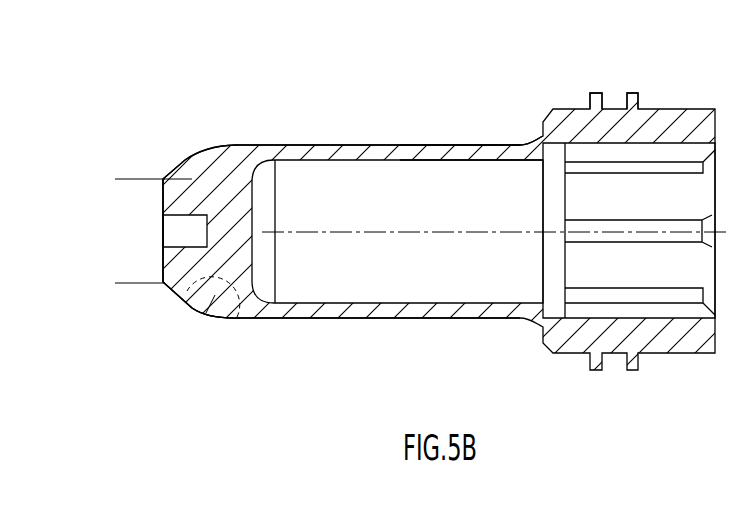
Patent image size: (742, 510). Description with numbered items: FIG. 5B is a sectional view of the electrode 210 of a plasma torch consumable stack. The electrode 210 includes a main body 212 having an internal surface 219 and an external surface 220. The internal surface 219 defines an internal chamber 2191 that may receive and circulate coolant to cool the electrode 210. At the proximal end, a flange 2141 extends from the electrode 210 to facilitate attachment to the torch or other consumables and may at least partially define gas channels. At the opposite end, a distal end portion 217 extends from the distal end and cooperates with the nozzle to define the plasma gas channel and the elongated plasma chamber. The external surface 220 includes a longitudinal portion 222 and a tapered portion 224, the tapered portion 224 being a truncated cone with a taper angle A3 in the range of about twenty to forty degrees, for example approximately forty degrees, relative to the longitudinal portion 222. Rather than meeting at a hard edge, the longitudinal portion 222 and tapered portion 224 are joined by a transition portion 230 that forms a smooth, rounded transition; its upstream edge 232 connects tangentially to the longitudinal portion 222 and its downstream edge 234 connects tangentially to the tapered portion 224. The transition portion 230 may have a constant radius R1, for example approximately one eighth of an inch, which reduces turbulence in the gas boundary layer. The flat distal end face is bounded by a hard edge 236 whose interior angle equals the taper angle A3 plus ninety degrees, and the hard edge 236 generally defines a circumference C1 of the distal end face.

The electrode 210 is at (398, 120).
The main body 212 is at (412, 325).
The distal end portion 217 is at (238, 248).
The internal surface 219 is at (486, 162).
The external surface 220 is at (485, 144).
The longitudinal portion 222 is at (308, 145).
The tapered portion 224 is at (190, 156).
The transition portion 230 is at (191, 309).
The upstream edge 232 is at (210, 317).
The downstream edge 234 is at (176, 295).
The hard edge 236 is at (162, 178).
The flange 2141 is at (617, 108).
The internal chamber 2191 is at (425, 272).
The taper angle A3 is at (190, 176).
The circumference C1 is at (135, 180).
The constant radius R1 is at (226, 314).